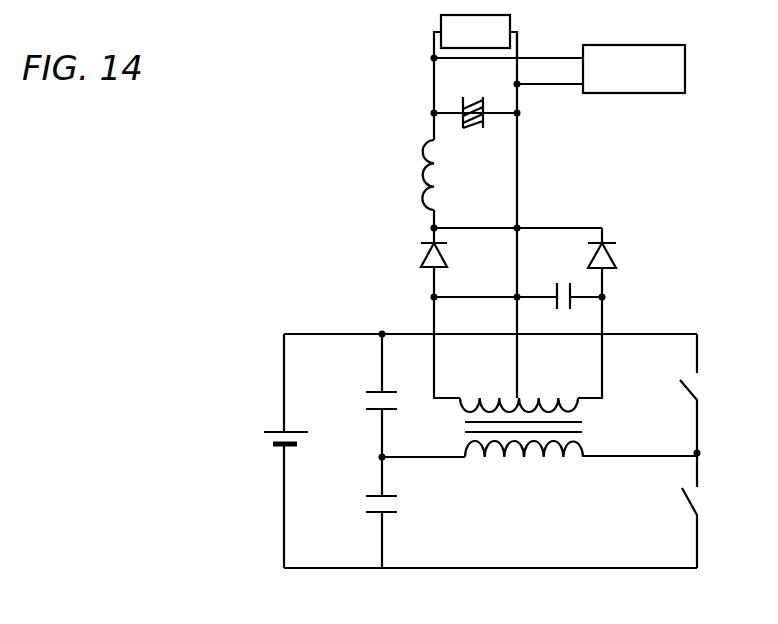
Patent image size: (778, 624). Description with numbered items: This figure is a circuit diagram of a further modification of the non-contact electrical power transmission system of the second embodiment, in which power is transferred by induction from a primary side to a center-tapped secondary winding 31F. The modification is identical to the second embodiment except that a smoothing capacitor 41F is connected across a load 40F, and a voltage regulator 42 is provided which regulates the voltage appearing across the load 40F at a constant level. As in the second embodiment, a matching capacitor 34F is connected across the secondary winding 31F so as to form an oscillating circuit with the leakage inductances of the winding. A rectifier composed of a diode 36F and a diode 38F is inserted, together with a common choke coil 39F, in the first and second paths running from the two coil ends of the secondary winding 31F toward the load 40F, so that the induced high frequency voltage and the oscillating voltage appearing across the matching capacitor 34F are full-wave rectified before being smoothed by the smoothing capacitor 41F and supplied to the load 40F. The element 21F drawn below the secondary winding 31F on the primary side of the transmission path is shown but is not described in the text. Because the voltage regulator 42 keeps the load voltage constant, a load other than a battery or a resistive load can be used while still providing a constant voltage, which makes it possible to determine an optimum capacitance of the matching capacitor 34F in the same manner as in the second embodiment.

The load 40F is at (457, 15).
The voltage regulator 42 is at (559, 69).
The smoothing capacitor 41F is at (470, 137).
The choke coil 39F is at (410, 155).
The diode 36F is at (418, 265).
The diode 38F is at (615, 260).
The matching capacitor 34F is at (565, 312).
The secondary winding 31F is at (543, 395).
The secondary winding 21F is at (538, 478).